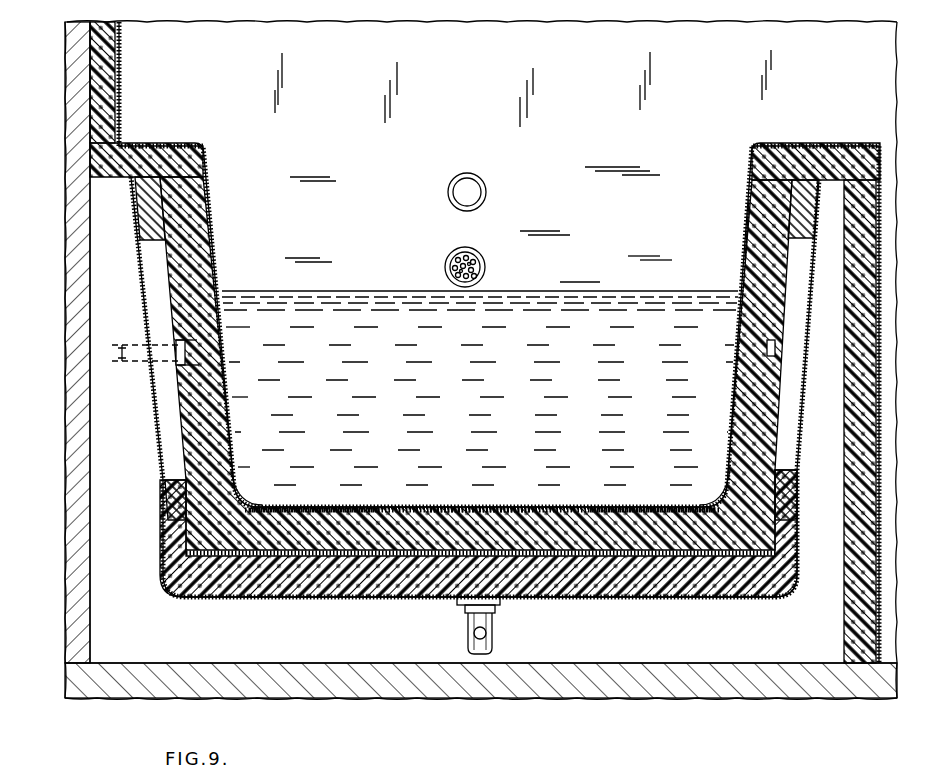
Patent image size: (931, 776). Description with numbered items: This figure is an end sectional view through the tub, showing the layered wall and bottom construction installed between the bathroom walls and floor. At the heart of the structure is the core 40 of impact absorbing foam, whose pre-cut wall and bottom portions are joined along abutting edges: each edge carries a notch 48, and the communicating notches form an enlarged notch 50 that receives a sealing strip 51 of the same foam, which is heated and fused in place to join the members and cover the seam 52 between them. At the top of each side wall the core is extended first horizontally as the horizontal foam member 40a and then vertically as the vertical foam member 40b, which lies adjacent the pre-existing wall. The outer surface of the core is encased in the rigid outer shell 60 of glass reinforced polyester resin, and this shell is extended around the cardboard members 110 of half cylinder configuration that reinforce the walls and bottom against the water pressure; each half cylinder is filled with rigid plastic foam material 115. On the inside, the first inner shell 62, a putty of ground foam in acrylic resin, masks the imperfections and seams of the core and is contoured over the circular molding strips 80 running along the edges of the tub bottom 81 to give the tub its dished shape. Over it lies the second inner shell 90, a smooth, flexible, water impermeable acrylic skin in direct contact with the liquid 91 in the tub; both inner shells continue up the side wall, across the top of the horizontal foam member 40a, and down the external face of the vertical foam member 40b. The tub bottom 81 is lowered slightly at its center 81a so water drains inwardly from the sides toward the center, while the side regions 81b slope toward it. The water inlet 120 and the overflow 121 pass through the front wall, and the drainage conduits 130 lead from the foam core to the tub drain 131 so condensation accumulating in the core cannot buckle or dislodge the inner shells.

The core 40 is at (187, 233).
The horizontal foam member 40a is at (176, 150).
The vertical foam member 40b is at (112, 66).
The notch 48 is at (186, 341).
The enlarged notch 50 is at (120, 364).
The sealing strip 51 is at (178, 346).
The seam 52 is at (197, 346).
The rigid outer shell 60 is at (142, 266).
The first inner shell 62 is at (748, 236).
The circular molding strips 80 is at (233, 497).
The tub bottom 81 is at (408, 506).
The center of the tub bottom 81a is at (480, 506).
The floor mat end portion 81b is at (325, 506).
The second inner shell 90 is at (206, 196).
The liquid 91 is at (573, 306).
The cardboard members 110 is at (143, 176).
The rigid plastic foam material 115 is at (148, 210).
The water inlet 120 is at (448, 192).
The overflow 121 is at (450, 270).
The drainage conduits 130 is at (493, 637).
The tub drain 131 is at (470, 619).